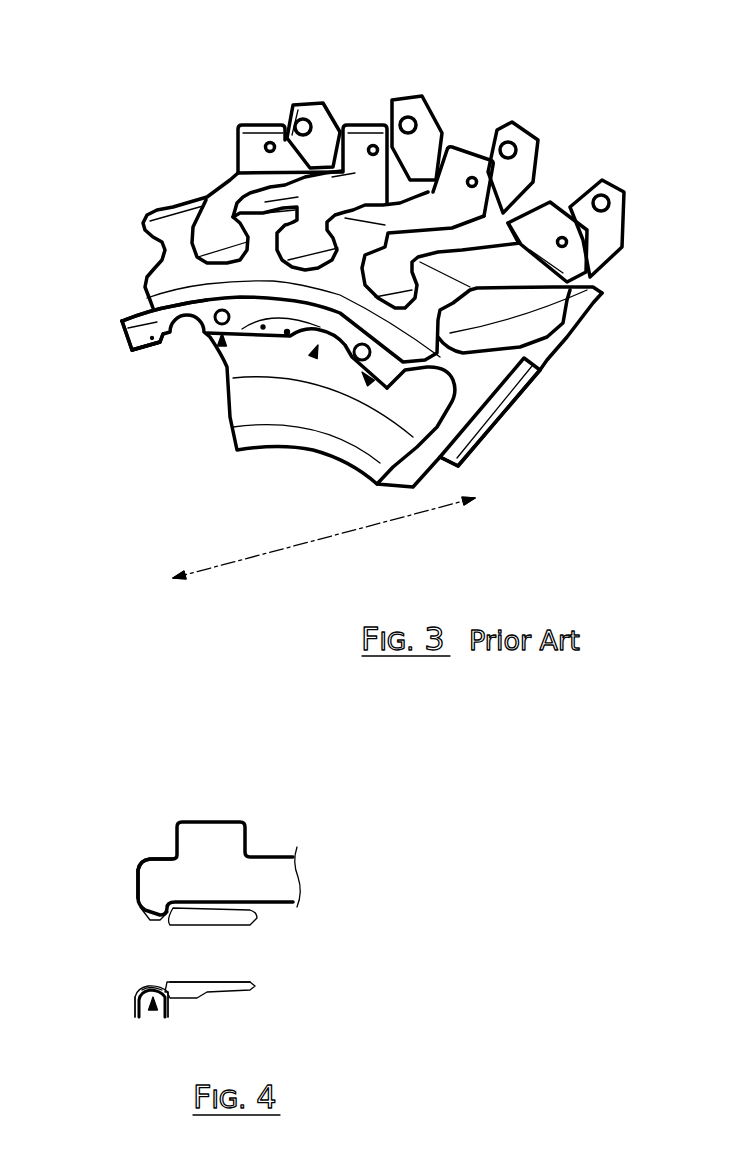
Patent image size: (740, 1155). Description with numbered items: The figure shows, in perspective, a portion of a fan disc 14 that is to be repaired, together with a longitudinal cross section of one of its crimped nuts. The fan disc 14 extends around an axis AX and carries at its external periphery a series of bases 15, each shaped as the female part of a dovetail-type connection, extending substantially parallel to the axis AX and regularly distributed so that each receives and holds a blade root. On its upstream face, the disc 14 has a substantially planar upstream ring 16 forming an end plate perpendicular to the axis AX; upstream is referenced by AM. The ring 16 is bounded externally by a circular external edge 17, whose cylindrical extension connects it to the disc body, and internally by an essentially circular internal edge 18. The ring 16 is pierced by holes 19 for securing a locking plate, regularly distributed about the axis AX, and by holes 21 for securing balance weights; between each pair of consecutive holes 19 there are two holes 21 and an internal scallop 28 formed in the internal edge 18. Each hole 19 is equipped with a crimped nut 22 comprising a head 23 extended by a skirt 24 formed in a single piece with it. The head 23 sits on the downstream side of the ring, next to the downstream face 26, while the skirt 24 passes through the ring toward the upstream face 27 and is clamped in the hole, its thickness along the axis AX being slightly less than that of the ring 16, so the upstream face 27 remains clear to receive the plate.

In FIG. 3, the fan disc 14 is at (170, 160).
In FIG. 4, the fan disc 14 is at (285, 828).
In FIG. 3, the bases 15 is at (472, 237).
In FIG. 3, the upstream ring 16 is at (140, 340).
In FIG. 4, the upstream ring 16 is at (147, 890).
In FIG. 3, the external edge 17 is at (145, 348).
In FIG. 3, the internal edge 18 is at (157, 306).
In FIG. 3, the holes 19 is at (222, 345).
In FIG. 4, the holes 19 is at (152, 1012).
In FIG. 3, the holes 21 is at (287, 335).
In FIG. 3, the crimped nut 22 is at (218, 324).
In FIG. 4, the crimped nut 22 is at (277, 1003).
In FIG. 4, the head 23 is at (202, 993).
In FIG. 4, the skirt 24 is at (158, 985).
In FIG. 4, the downstream face 26 is at (165, 1010).
In FIG. 4, the upstream face 27 is at (135, 1013).
In FIG. 3, the internal scallop 28 is at (313, 357).
In FIG. 3, the axis AX is at (300, 548).
In FIG. 3, the upstream direction AM is at (200, 575).